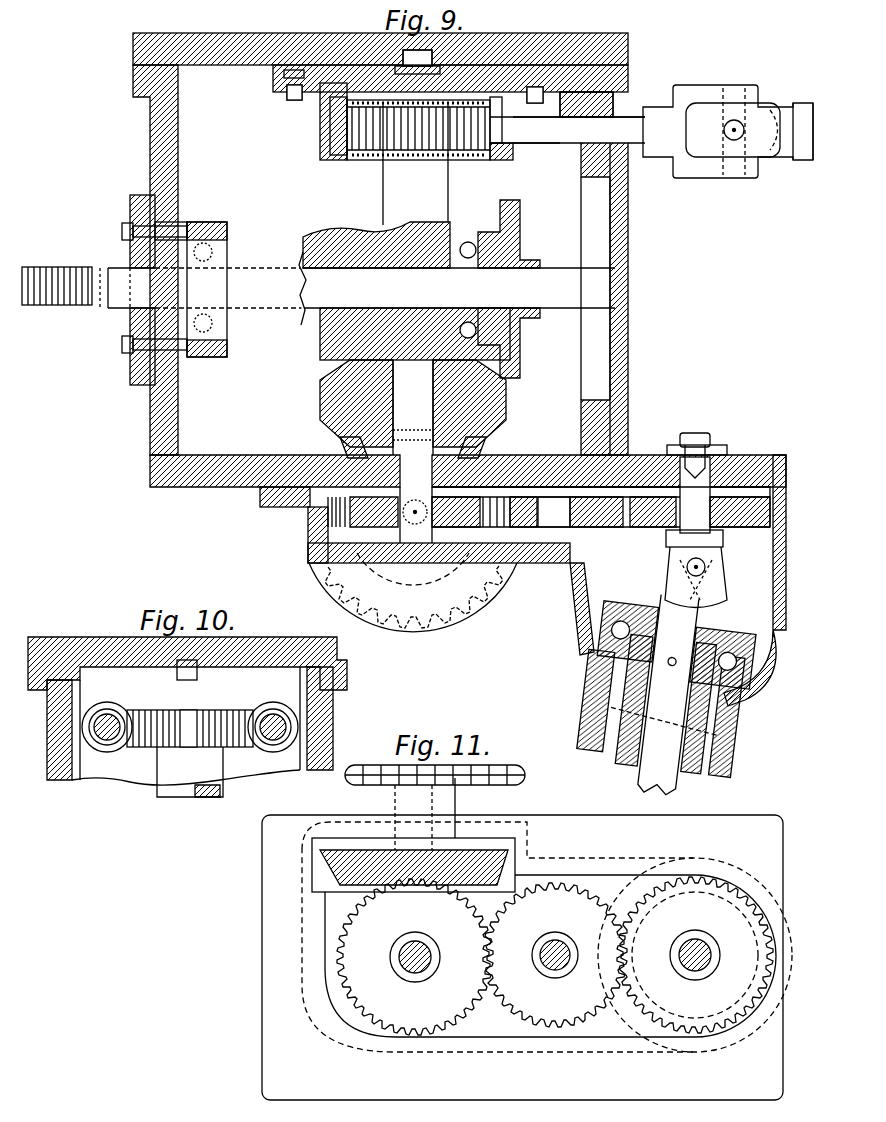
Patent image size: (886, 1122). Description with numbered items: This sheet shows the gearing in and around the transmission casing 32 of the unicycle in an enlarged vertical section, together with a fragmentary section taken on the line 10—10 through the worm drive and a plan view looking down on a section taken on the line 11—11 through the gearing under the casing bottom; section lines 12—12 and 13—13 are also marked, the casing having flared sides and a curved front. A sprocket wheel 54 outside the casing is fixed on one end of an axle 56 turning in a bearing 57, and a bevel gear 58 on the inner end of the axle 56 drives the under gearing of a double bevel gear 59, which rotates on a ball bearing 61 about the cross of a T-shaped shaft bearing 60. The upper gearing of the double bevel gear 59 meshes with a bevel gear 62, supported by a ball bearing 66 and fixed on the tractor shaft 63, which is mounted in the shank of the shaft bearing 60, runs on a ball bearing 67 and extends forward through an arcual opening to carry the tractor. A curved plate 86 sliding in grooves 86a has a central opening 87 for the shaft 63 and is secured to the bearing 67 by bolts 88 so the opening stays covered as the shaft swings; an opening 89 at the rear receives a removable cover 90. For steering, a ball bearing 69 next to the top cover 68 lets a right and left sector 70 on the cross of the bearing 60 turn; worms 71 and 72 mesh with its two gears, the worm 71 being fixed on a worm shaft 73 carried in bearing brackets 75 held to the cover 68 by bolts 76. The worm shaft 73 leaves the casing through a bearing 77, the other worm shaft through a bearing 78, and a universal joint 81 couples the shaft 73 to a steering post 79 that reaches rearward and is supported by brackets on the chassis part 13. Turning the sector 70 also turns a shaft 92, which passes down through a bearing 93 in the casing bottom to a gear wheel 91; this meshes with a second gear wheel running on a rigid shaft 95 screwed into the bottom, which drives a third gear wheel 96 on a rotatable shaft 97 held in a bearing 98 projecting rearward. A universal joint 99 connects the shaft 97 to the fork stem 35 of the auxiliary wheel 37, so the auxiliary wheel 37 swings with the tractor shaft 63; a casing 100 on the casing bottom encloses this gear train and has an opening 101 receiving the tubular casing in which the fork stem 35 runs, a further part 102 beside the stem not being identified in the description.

In FIG. 9, the section line 10 is at (362, 18).
In FIG. 9, the section line 11 is at (248, 492).
In FIG. 9, the section line 12- 12 is at (139, 150).
In FIG. 9, the chassis part 13 is at (100, 243).
In FIG. 9, the transmission casing 32 is at (150, 113).
In FIG. 10, the transmission casing 32 is at (50, 763).
In FIG. 9, the fork stem 35 is at (708, 720).
In FIG. 9, the auxiliary wheel 37 is at (705, 762).
In FIG. 11, the sprocket wheel 54 is at (507, 766).
In FIG. 9, the axle 56 is at (302, 531).
In FIG. 11, the axle 56 is at (392, 800).
In FIG. 9, the bearing 57 is at (352, 582).
In FIG. 11, the bearing 57 is at (458, 800).
In FIG. 9, the bevel gear 58 is at (485, 450).
In FIG. 11, the bevel gear 58 is at (503, 858).
In FIG. 9, the double bevel gear 59 is at (347, 390).
In FIG. 9, the T-shaped shaft bearing 60 is at (397, 218).
In FIG. 10, the T-shaped shaft bearing 60 is at (180, 792).
In FIG. 9, the ball bearing 61 is at (411, 430).
In FIG. 9, the bevel gear 62 is at (512, 240).
In FIG. 9, the tractor shaft 63 is at (522, 281).
In FIG. 9, the ball bearing 66 is at (470, 243).
In FIG. 9, the ball bearing 67 is at (165, 252).
In FIG. 9, the top cover 68 is at (133, 38).
In FIG. 10, the top cover 68 is at (82, 637).
In FIG. 9, the ball bearing 69 is at (478, 58).
In FIG. 10, the ball bearing 69 is at (180, 690).
In FIG. 9, the right and left sector 70 is at (470, 132).
In FIG. 10, the right and left sector 70 is at (170, 755).
In FIG. 9, the worm 71 is at (348, 100).
In FIG. 10, the worm 71 is at (107, 745).
In FIG. 10, the worm 72 is at (297, 727).
In FIG. 9, the worm shaft 73 is at (630, 118).
In FIG. 10, the worm shaft 73 is at (103, 745).
In FIG. 9, the bearing brackets 75 is at (292, 80).
In FIG. 10, the bearing brackets 75 is at (268, 684).
In FIG. 9, the bolts 76 is at (290, 100).
In FIG. 9, the bearing 77 is at (612, 122).
In FIG. 10, the bearing 78 is at (277, 745).
In FIG. 9, the steering post 79 is at (808, 165).
In FIG. 9, the universal joint 81 is at (740, 117).
In FIG. 9, the curved plate 86 is at (133, 372).
In FIG. 9, the grooves 86a is at (158, 375).
In FIG. 9, the central opening 87 is at (133, 320).
In FIG. 9, the bolts 88 is at (125, 222).
In FIG. 9, the opening 89 is at (598, 268).
In FIG. 9, the removable cover 90 is at (633, 233).
In FIG. 9, the gear wheel 91 is at (462, 525).
In FIG. 11, the gear wheel 91 is at (415, 957).
In FIG. 9, the shaft 92 is at (414, 525).
In FIG. 11, the shaft 92 is at (420, 957).
In FIG. 9, the bearing 93 is at (333, 462).
In FIG. 9, the rigid shaft 95 is at (607, 512).
In FIG. 11, the rigid shaft 95 is at (548, 964).
In FIG. 9, the third gear wheel 96 is at (720, 524).
In FIG. 11, the third gear wheel 96 is at (695, 955).
In FIG. 9, the rotatable shaft 97 is at (698, 493).
In FIG. 11, the rotatable shaft 97 is at (690, 956).
In FIG. 9, the bearing 98 is at (716, 487).
In FIG. 9, the universal joint 99 is at (664, 577).
In FIG. 9, the casing 100 is at (557, 567).
In FIG. 11, the casing 100 is at (272, 968).
In FIG. 9, the opening 101 is at (598, 662).
In FIG. 9, the bearing 102 is at (735, 655).